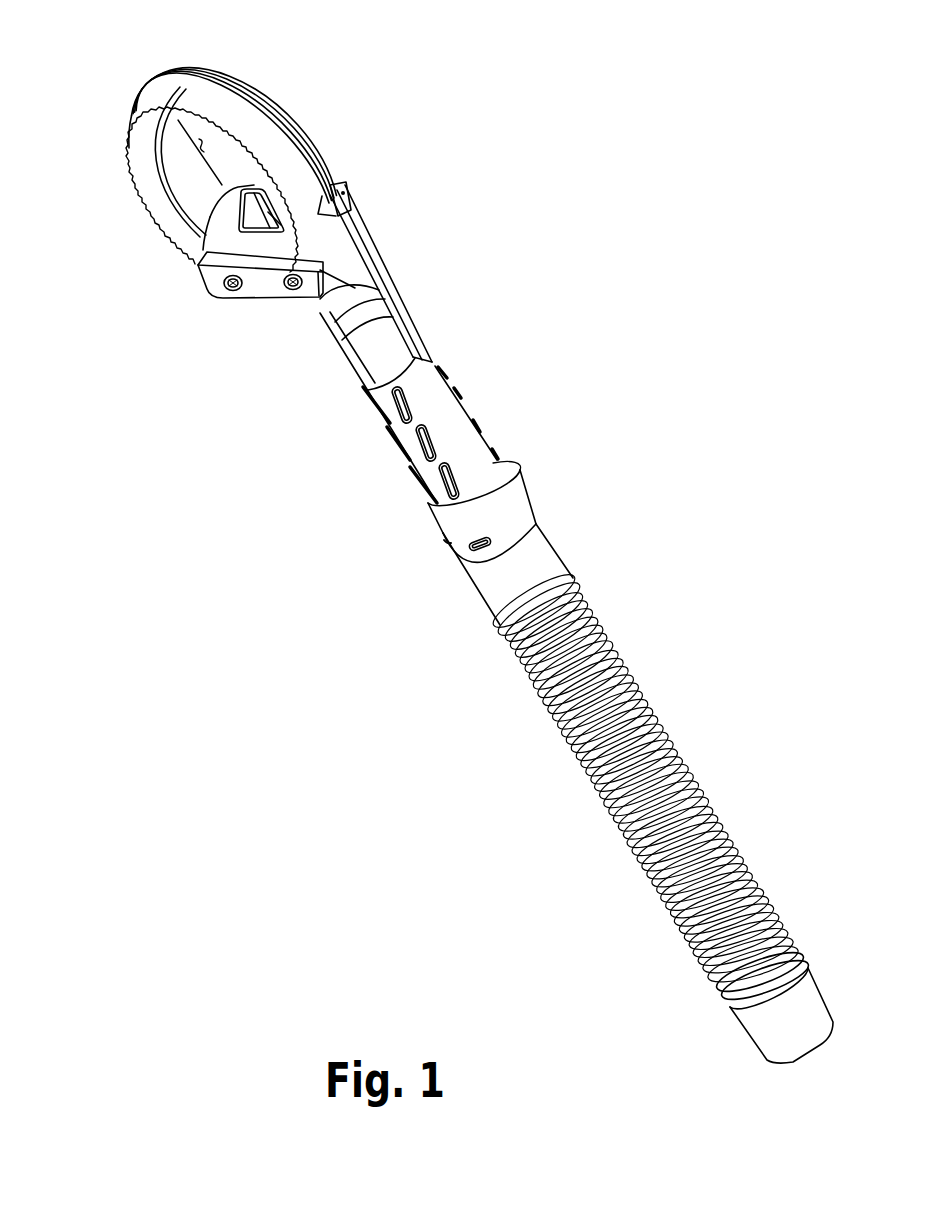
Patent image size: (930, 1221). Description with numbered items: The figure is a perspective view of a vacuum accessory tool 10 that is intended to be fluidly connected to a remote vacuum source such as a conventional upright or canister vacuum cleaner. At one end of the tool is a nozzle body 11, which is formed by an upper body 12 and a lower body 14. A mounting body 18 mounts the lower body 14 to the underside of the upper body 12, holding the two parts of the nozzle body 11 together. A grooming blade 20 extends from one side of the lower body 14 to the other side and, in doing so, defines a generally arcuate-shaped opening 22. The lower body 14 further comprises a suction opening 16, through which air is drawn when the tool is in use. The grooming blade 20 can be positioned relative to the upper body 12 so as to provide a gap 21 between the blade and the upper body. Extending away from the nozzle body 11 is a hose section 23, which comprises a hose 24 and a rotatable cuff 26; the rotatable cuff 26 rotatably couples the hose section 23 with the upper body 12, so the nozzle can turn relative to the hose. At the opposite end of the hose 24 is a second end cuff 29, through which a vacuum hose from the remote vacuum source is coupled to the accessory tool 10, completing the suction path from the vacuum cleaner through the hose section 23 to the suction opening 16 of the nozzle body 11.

The vacuum accessory tool 10 is at (606, 226).
The nozzle body 11 is at (558, 502).
The upper body 12 is at (259, 94).
The lower body 14 is at (219, 220).
The suction opening 16 is at (282, 235).
The mounting body 18 is at (334, 344).
The grooming blade 20 is at (127, 152).
The gap 21 is at (333, 210).
The arcuate-shaped opening 22 is at (200, 147).
The hose section 23 is at (568, 516).
The hose 24 is at (550, 695).
The rotatable cuff 26 is at (487, 585).
The second end cuff 29 is at (760, 1023).